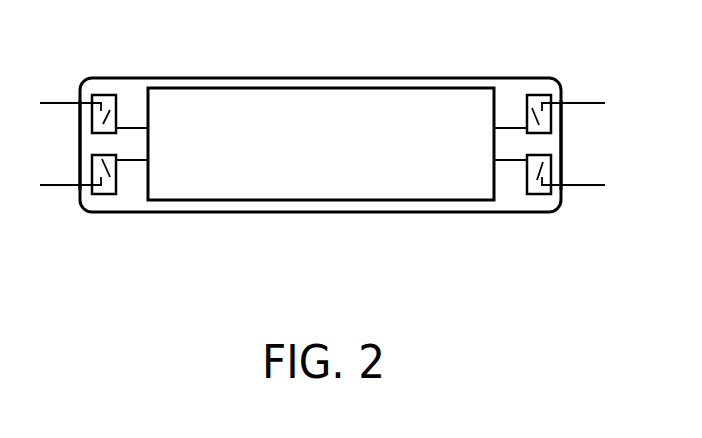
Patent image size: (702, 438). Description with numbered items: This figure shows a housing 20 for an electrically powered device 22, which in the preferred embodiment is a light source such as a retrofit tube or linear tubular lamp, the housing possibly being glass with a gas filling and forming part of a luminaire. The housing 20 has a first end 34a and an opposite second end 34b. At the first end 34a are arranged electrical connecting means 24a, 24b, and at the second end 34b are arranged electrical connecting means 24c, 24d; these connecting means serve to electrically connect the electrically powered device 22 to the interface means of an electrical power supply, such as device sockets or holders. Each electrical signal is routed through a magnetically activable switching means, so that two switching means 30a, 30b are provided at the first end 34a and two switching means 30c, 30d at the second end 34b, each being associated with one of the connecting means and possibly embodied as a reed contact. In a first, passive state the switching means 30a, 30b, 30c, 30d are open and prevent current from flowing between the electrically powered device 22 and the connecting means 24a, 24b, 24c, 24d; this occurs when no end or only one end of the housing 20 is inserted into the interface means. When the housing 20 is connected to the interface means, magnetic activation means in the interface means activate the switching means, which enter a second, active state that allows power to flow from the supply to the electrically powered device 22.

The housing 20 is at (328, 78).
The electrically powered device 22 is at (328, 200).
The electrical connecting means 24a is at (60, 102).
The electrical connecting means 24b is at (60, 187).
The electrical connecting means 24c is at (583, 102).
The electrical connecting means 24d is at (583, 187).
The magnetically activable switching means 30a is at (100, 93).
The magnetically activable switching means 30b is at (100, 196).
The magnetically activable switching means 30c is at (540, 93).
The magnetically activable switching means 30d is at (540, 196).
The first end 34a is at (80, 145).
The second end 34b is at (561, 145).